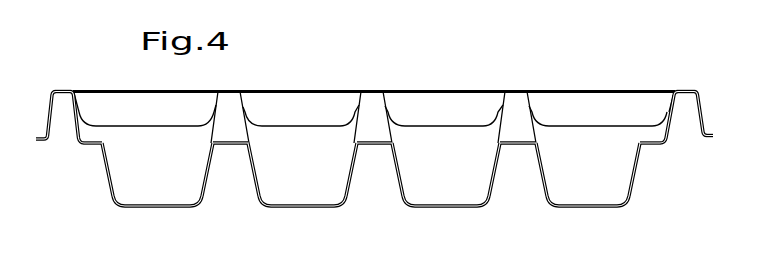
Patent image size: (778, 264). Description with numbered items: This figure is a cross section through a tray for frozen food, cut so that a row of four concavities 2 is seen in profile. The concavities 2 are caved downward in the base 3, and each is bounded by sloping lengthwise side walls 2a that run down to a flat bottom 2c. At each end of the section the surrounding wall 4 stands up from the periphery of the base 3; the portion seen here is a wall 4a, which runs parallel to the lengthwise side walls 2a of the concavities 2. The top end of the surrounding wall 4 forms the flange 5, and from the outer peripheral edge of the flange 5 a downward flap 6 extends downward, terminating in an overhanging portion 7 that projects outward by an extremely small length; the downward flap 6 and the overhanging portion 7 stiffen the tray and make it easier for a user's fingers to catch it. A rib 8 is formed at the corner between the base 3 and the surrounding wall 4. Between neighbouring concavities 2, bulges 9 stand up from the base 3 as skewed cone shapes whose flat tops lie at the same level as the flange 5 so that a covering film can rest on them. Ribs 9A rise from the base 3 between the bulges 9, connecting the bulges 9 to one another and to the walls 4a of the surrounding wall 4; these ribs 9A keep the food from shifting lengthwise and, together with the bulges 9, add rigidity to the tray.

The concavity 2 is at (371, 200).
The lengthwise side wall 2a is at (114, 163).
The bottom 2c is at (371, 184).
The base 3 is at (92, 141).
The surrounding wall 4 is at (74, 135).
The wall 4a is at (78, 100).
The flange 5 is at (63, 90).
The downward flap 6 is at (55, 117).
The overhanging portion 7 is at (43, 141).
The rib 8 is at (667, 110).
The bulge 9 is at (235, 110).
The rib 9A is at (155, 133).